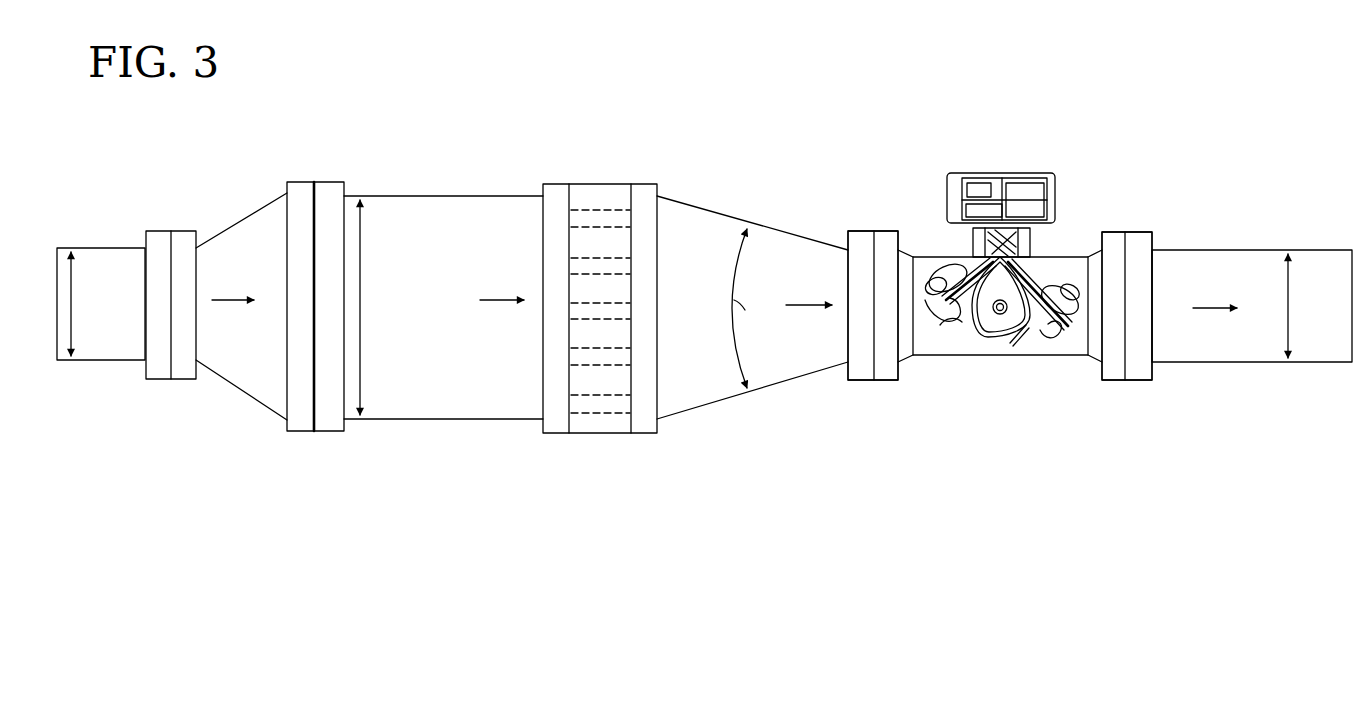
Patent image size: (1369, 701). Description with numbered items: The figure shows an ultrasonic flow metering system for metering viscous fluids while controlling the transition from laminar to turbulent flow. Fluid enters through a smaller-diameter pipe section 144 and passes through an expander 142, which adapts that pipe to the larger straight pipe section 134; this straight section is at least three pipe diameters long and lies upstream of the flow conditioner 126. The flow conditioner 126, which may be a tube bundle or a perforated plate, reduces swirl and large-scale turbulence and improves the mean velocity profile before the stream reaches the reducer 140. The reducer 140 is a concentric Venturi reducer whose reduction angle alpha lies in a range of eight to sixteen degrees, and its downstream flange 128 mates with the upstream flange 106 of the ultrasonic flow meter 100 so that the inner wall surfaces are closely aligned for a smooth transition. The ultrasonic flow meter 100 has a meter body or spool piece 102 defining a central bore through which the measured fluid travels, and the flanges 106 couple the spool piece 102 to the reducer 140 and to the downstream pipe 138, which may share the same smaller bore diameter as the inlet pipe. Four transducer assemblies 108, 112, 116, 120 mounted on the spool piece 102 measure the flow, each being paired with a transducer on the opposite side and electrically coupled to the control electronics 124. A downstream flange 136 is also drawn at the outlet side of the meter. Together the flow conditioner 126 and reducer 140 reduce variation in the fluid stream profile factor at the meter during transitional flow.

The ultrasonic flow meter 100 is at (990, 359).
The spool piece 102 is at (1030, 256).
The flanges 106 is at (888, 231).
The transducer assembly 108 is at (955, 272).
The transducer assembly 112 is at (1035, 265).
The transducer assembly 116 is at (952, 325).
The transducer assembly 120 is at (1040, 335).
The control electronics 124 is at (1040, 173).
The flow conditioner 126 is at (581, 181).
The downstream flange 128 is at (862, 380).
The straight pipe section 134 is at (468, 196).
The outlet flange 136 is at (1138, 380).
The pipe 138 is at (1258, 250).
The reducer 140 is at (707, 208).
The expander 142 is at (247, 218).
The pipe section 144 is at (96, 248).